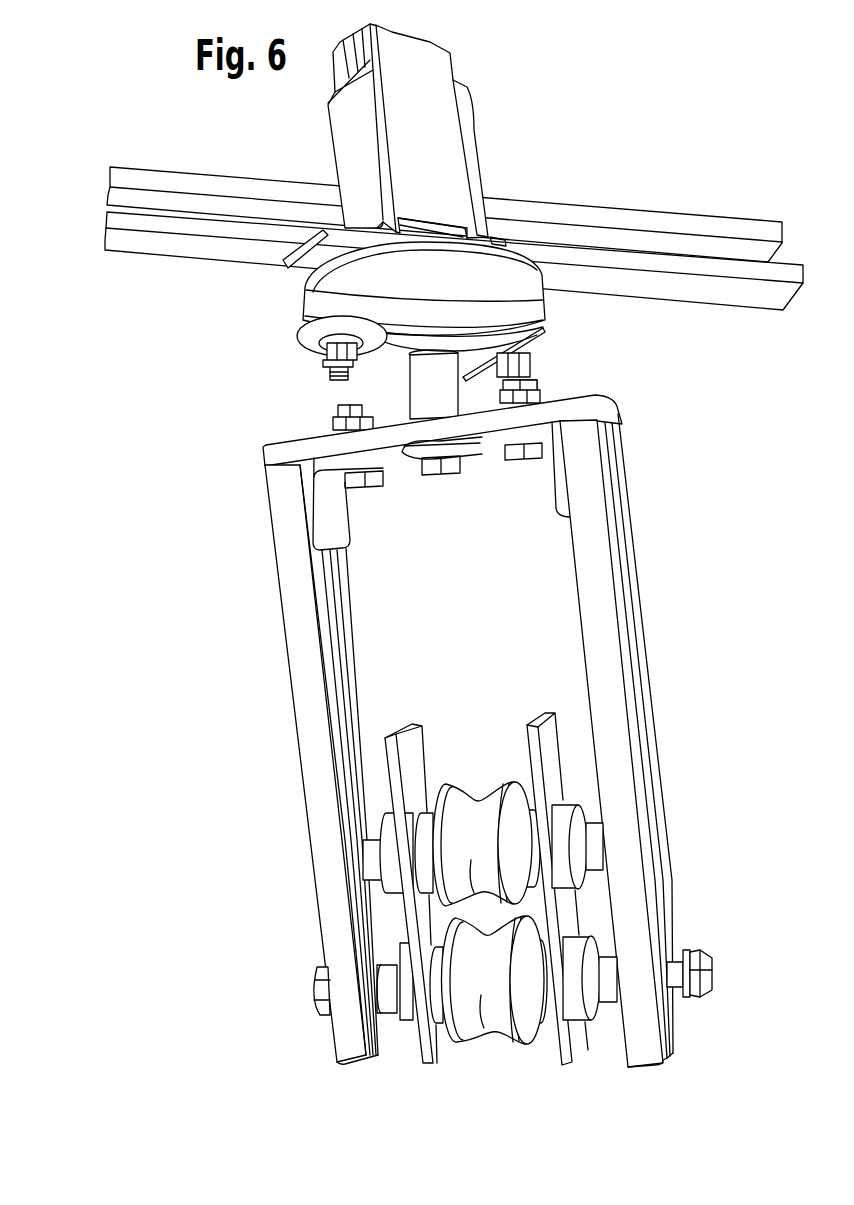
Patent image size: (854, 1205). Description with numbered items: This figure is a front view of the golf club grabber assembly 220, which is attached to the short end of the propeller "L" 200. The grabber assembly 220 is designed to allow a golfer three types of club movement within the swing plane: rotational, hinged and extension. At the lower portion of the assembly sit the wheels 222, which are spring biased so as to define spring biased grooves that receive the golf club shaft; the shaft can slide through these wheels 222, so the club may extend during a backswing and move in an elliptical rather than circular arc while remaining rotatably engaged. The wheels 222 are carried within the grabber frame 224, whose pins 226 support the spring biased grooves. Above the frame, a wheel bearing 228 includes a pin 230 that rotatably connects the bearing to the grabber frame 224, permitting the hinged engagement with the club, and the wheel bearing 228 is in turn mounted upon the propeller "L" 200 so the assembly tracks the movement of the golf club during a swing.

The propeller "L" 200 is at (443, 135).
The golf club grabber assembly 220 is at (480, 753).
The wheels 222 is at (492, 997).
The grabber frame 224 is at (300, 672).
The pins 226 is at (373, 857).
The wheel bearing 228 is at (303, 286).
The pin 230 is at (423, 398).